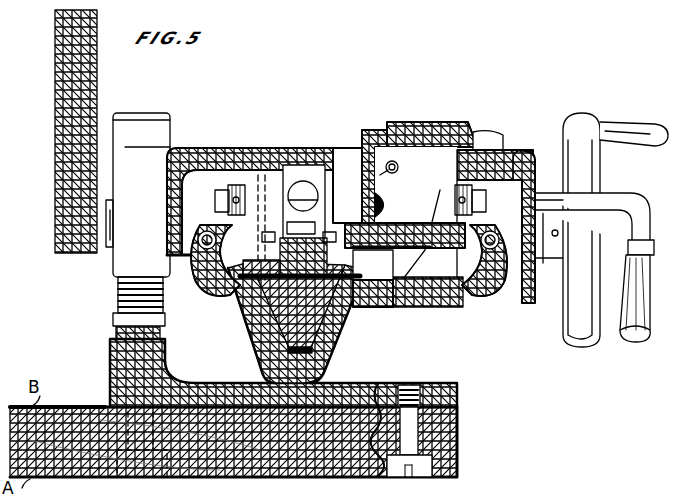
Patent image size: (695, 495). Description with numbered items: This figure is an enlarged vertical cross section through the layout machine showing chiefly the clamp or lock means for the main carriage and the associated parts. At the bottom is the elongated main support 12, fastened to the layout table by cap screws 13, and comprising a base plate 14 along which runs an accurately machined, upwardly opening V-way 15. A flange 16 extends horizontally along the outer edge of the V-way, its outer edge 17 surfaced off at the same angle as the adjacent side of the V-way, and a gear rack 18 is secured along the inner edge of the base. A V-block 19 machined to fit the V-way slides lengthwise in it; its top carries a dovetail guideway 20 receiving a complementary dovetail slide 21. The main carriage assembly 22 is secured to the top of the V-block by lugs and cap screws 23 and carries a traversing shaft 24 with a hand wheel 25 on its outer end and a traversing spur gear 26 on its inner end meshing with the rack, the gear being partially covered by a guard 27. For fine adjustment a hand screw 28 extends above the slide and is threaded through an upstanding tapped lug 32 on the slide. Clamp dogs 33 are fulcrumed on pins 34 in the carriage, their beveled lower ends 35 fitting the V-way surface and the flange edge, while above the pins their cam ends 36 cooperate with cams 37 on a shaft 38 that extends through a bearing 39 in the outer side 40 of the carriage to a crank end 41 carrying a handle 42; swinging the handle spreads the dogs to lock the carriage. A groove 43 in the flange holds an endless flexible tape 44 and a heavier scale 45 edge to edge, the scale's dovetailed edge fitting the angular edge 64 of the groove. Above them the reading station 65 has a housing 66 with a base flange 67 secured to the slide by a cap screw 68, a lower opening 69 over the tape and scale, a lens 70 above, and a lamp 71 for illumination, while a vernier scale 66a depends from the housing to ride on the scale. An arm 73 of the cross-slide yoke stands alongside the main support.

The main support 12 is at (462, 388).
The cap screws 13 is at (433, 462).
The base plate 14 is at (378, 383).
The V-way 15 is at (330, 345).
The flange 16 is at (368, 306).
The surfaced-off edge 17 is at (462, 307).
The gear rack 18 is at (116, 333).
The V-block 19 is at (268, 350).
The dovetail guideway 20 is at (258, 320).
The dovetail slide 21 is at (242, 308).
The main carriage assembly 22 is at (208, 147).
The cap screws 23 is at (262, 170).
The traversing shaft 24 is at (646, 222).
The hand wheel 25 is at (598, 165).
The traversing spur gear 26 is at (118, 296).
The guard 27 is at (148, 113).
The hand screw 28 is at (322, 165).
The tapped lug 32 is at (300, 180).
The clamp dogs 33 is at (195, 280).
The pins 34 is at (538, 265).
The beveled lower ends 35 is at (215, 300).
The cam ends 36 is at (215, 204).
The cams 37 is at (228, 186).
The shaft 38 is at (502, 135).
The bearing 39 is at (527, 150).
The outer side 40 is at (535, 303).
The crank end 41 is at (654, 248).
The handle 42 is at (650, 310).
The groove 43 is at (420, 307).
The endless flexible tape 44 is at (430, 268).
The scale 45 is at (418, 307).
The angular edge 64 is at (392, 307).
The reading station 65 is at (397, 118).
The housing 66 is at (365, 130).
The vernier scale 66a is at (373, 265).
The base flange 67 is at (342, 223).
The cap screw 68 is at (300, 249).
The lower opening 69 is at (400, 235).
The lens 70 is at (445, 121).
The lamp 71 is at (398, 165).
The arm 73 is at (55, 82).